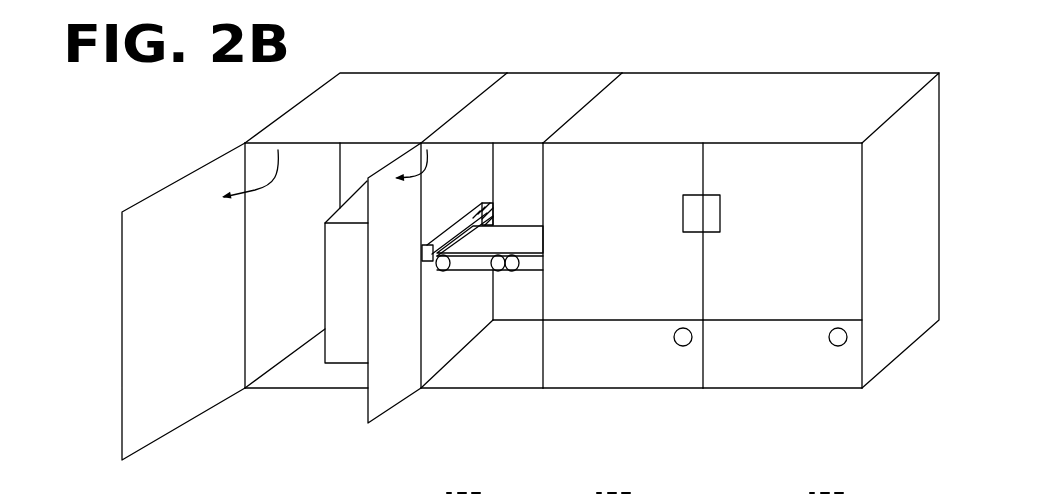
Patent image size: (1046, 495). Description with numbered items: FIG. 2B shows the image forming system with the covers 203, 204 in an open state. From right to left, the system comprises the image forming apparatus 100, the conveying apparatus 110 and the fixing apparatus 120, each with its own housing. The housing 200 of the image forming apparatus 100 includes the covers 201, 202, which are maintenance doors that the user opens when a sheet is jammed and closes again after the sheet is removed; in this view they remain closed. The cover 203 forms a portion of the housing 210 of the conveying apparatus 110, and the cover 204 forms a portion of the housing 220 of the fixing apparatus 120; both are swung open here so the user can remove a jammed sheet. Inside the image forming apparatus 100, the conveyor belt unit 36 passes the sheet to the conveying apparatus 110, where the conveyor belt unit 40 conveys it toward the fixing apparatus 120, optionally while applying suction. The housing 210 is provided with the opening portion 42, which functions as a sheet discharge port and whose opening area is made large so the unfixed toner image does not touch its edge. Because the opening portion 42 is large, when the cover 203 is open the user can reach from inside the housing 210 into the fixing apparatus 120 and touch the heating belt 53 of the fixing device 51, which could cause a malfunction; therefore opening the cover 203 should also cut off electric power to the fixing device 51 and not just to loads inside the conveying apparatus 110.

The image forming apparatus 100 is at (815, 55).
The conveying apparatus 110 is at (586, 55).
The fixing apparatus 120 is at (447, 55).
The housing 200 is at (755, 72).
The cover 201 is at (823, 195).
The cover 202 is at (643, 195).
The housing 210 is at (538, 72).
The housing 220 is at (402, 72).
The cover 203 is at (387, 412).
The cover 204 is at (207, 408).
The fixing device 51 is at (327, 221).
The heating belt 53 is at (495, 208).
The opening portion 42 is at (498, 215).
The conveyor belt unit 40 is at (468, 272).
The conveyor belt unit 36 is at (527, 272).